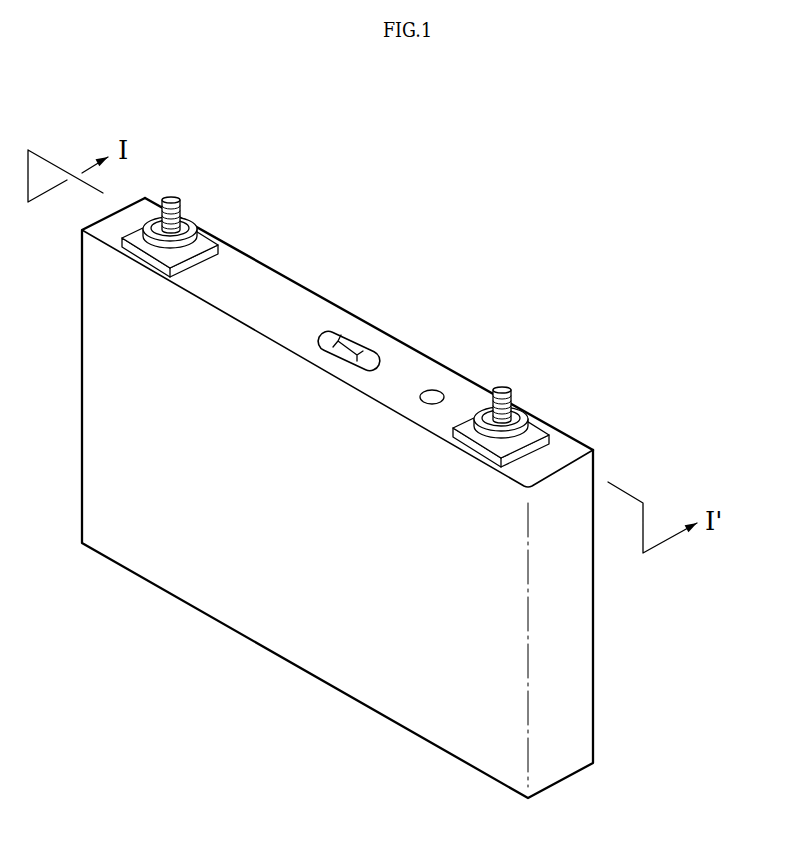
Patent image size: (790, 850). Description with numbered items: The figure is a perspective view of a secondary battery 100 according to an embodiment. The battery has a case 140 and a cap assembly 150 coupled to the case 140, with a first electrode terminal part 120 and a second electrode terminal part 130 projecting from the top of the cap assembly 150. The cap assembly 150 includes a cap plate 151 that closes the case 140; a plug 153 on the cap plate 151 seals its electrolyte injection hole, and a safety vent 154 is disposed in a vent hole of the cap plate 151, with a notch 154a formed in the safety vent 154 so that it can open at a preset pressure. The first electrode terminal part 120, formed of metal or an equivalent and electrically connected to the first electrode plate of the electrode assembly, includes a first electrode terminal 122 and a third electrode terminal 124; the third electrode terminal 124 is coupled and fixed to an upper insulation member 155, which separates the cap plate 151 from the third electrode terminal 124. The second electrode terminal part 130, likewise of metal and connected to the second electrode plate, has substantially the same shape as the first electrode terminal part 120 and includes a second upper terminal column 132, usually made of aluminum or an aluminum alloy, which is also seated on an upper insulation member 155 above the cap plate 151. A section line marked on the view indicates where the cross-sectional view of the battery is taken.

The secondary battery 100 is at (653, 148).
The first electrode terminal part 120 is at (200, 199).
The first electrode terminal 122 is at (182, 212).
The third electrode terminal 124 is at (191, 218).
The second electrode terminal part 130 is at (520, 388).
The second upper terminal column 132 is at (512, 400).
The case 140 is at (285, 645).
The cap assembly 150 is at (337, 338).
The cap plate 151 is at (398, 358).
The plug 153 is at (433, 391).
The safety vent 154 is at (377, 308).
The notch 154a is at (360, 352).
The upper insulation member 155 is at (204, 253).